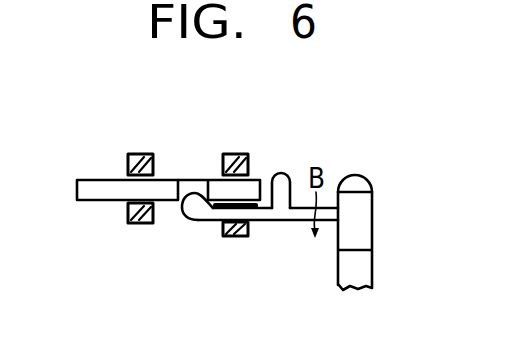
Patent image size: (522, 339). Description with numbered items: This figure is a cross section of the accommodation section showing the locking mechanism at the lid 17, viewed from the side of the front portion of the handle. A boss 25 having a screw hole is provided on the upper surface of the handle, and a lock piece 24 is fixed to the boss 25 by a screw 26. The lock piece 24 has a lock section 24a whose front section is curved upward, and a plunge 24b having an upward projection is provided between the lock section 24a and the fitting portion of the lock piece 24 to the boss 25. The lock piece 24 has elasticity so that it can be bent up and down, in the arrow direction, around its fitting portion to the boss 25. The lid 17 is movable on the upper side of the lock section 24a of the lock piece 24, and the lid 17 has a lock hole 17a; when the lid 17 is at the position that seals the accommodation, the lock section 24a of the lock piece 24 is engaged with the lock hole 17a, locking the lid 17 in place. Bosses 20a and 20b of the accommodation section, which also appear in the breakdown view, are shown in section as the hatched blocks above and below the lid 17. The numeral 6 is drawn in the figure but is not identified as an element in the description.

The insulating support blocks 6 is at (140, 154).
The lid 17 is at (91, 180).
The lock hole 17a is at (192, 180).
The boss 20a is at (140, 224).
The boss 20b is at (238, 237).
The lock piece 24 is at (303, 222).
The lock section 24a is at (199, 221).
The plunge 24b is at (276, 177).
The boss 25 is at (372, 262).
The screw 26 is at (356, 177).